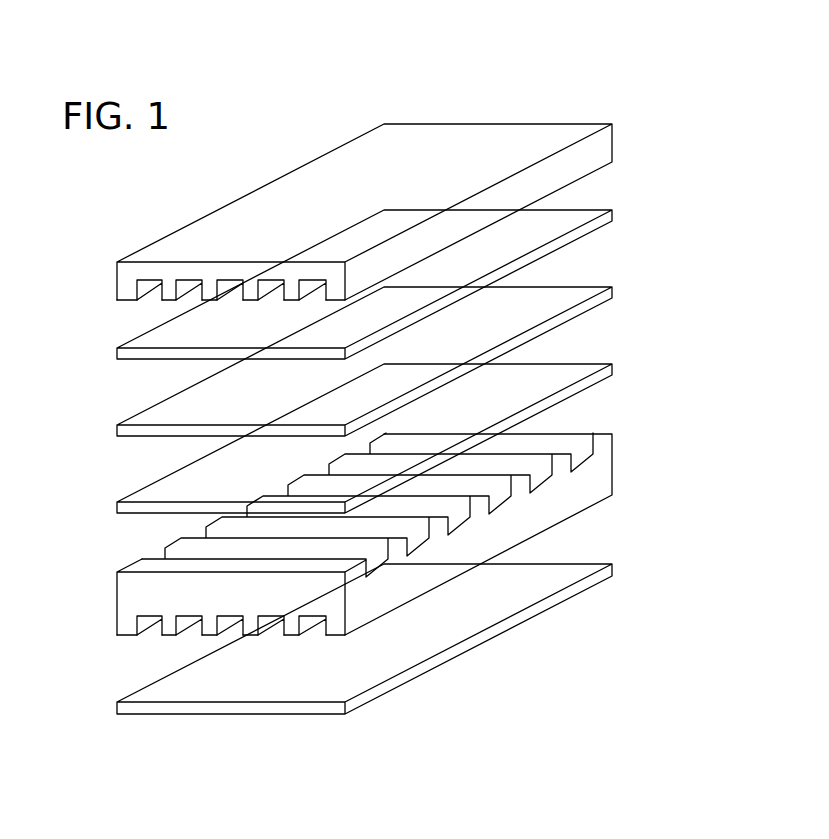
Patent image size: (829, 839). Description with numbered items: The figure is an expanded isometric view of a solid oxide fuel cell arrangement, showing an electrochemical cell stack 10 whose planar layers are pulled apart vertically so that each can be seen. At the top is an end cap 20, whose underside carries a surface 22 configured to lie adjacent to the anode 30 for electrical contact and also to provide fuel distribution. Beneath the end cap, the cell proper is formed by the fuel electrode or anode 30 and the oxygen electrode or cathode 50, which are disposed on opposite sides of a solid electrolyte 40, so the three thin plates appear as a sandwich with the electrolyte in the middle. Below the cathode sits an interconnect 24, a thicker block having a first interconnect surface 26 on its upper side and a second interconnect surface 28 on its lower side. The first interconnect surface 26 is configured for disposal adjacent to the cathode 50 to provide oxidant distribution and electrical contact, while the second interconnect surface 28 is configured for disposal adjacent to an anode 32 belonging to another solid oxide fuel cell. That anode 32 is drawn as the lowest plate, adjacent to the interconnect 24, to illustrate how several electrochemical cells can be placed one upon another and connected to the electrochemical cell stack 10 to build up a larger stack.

The electrochemical cell stack 10 is at (577, 63).
The end cap 20 is at (613, 141).
The surface 22 is at (158, 302).
The anode 30 is at (613, 213).
The solid electrolyte 40 is at (613, 290).
The cathode 50 is at (613, 370).
The interconnect 24 is at (613, 488).
The first interconnect surface 26 is at (574, 434).
The second interconnect surface 28 is at (165, 637).
The anode 32 is at (613, 572).